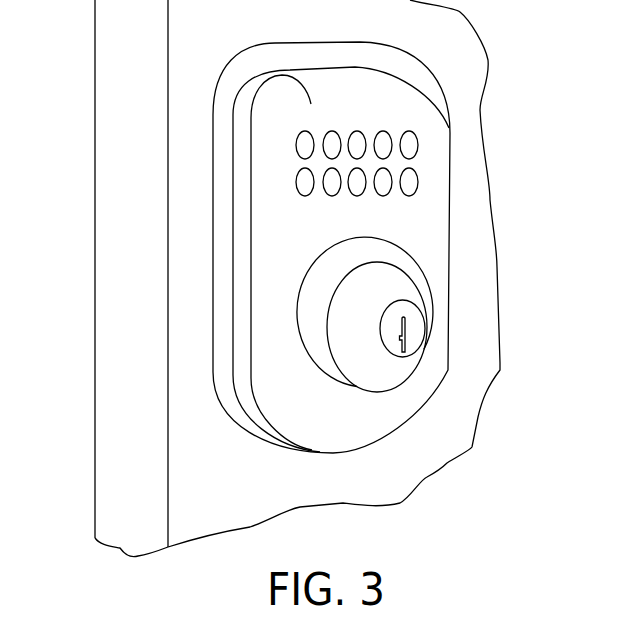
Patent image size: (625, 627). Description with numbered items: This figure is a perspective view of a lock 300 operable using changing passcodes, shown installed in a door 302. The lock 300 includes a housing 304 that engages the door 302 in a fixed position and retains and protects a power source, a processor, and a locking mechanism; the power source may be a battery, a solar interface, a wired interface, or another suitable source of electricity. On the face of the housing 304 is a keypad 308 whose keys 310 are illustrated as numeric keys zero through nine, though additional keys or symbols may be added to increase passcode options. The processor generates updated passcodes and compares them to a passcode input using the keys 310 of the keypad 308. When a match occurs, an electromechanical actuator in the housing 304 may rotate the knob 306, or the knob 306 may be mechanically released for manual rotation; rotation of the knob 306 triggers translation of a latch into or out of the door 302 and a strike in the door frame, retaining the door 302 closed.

The lock 300 is at (190, 167).
The door 302 is at (127, 363).
The housing 304 is at (355, 66).
The knob 306 is at (430, 363).
The keypad 308 is at (438, 185).
The keys 310 is at (418, 169).